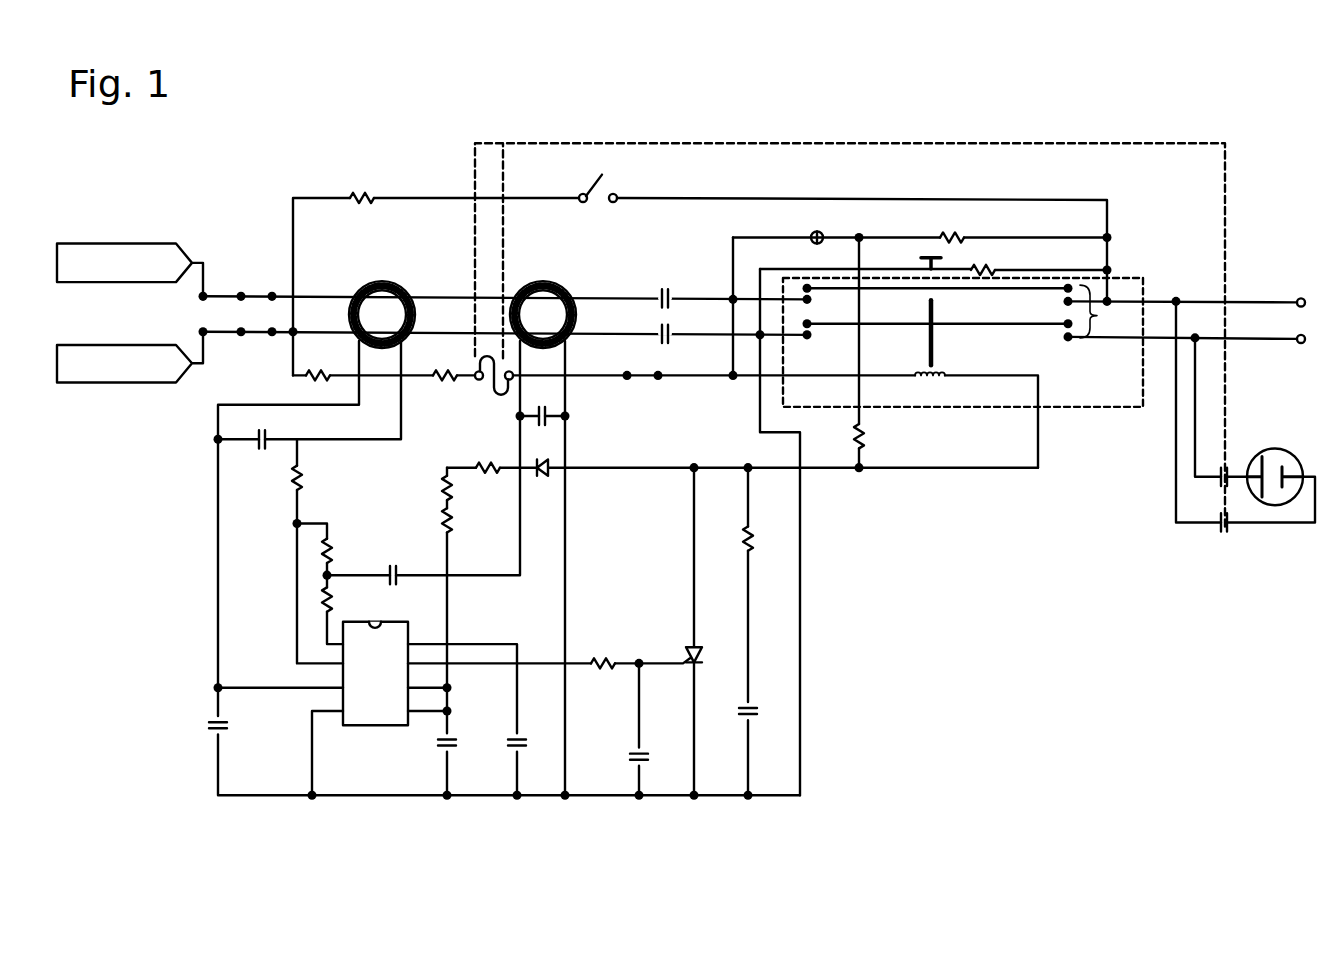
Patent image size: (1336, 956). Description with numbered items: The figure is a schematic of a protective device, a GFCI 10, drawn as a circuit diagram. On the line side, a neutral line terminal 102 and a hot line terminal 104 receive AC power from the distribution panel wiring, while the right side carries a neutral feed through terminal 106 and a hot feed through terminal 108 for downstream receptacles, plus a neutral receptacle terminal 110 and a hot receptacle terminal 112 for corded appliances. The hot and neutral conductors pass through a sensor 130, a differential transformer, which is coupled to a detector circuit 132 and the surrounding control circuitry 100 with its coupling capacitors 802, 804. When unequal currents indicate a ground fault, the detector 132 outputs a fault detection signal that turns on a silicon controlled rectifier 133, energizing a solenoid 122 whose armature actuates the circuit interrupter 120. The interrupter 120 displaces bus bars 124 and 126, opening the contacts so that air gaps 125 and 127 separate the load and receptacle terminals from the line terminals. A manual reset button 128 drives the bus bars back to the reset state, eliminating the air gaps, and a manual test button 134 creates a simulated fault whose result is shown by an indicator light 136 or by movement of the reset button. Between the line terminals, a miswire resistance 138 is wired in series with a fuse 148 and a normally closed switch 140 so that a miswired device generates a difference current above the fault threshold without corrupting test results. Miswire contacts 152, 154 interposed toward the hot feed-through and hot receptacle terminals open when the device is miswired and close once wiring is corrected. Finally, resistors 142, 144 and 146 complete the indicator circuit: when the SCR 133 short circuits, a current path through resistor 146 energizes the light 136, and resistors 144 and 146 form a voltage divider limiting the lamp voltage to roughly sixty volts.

The GFCI 10 is at (814, 84).
The control circuit 100 is at (822, 544).
The neutral line terminal 102 is at (128, 342).
The hot line terminal 104 is at (128, 242).
The neutral feed through terminal 106 is at (1300, 341).
The hot feed through terminal 108 is at (1298, 296).
The neutral receptacle terminal 110 is at (1260, 452).
The hot receptacle terminal 112 is at (1285, 468).
The circuit interrupter 120 is at (1102, 406).
The solenoid 122 is at (948, 370).
The bus bar 124 is at (1022, 325).
The air gap 125 is at (842, 297).
The bus bar 126 is at (1008, 284).
The air gap 127 is at (813, 331).
The manual reset button 128 is at (926, 252).
The sensor 130 is at (377, 281).
The detector circuit 132 is at (386, 606).
The silicon controlled rectifier 133 is at (685, 644).
The manual test button 134 is at (614, 192).
The indicator light 136 is at (812, 231).
The miswire resistance 138 is at (453, 382).
The normally closed switch 140 is at (640, 378).
The resistor 142 is at (950, 228).
The resistor 144 is at (985, 260).
The resistor 146 is at (866, 430).
The fuse 148 is at (500, 392).
The miswire contact 152 is at (1222, 530).
The miswire contact 154 is at (1222, 462).
The capacitor 802 is at (668, 296).
The capacitor 804 is at (668, 340).